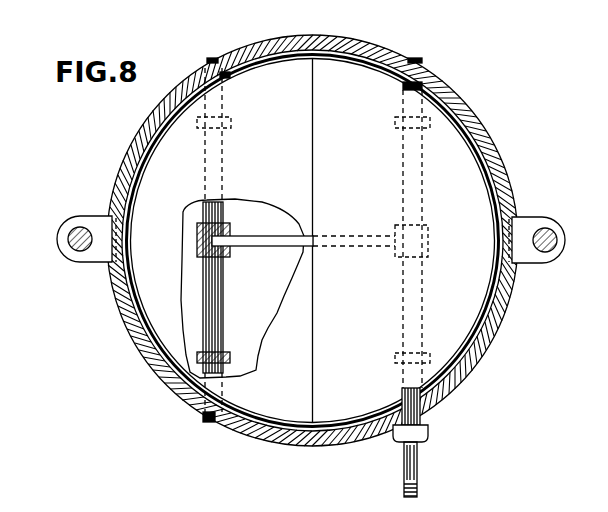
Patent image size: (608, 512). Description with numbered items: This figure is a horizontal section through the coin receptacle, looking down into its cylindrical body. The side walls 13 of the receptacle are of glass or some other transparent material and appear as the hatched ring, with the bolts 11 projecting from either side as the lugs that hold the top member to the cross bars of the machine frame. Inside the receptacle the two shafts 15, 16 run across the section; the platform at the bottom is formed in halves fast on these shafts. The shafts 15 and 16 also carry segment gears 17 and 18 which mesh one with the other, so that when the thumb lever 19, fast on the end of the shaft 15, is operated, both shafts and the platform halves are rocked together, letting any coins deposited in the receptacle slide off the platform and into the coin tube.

The bolts 11 is at (68, 240).
The side walls 13 is at (268, 428).
The shaft 15 is at (218, 294).
The shaft 16 is at (417, 283).
The segment gear 17 is at (342, 238).
The segment gear 18 is at (288, 241).
The thumb lever 19 is at (403, 463).